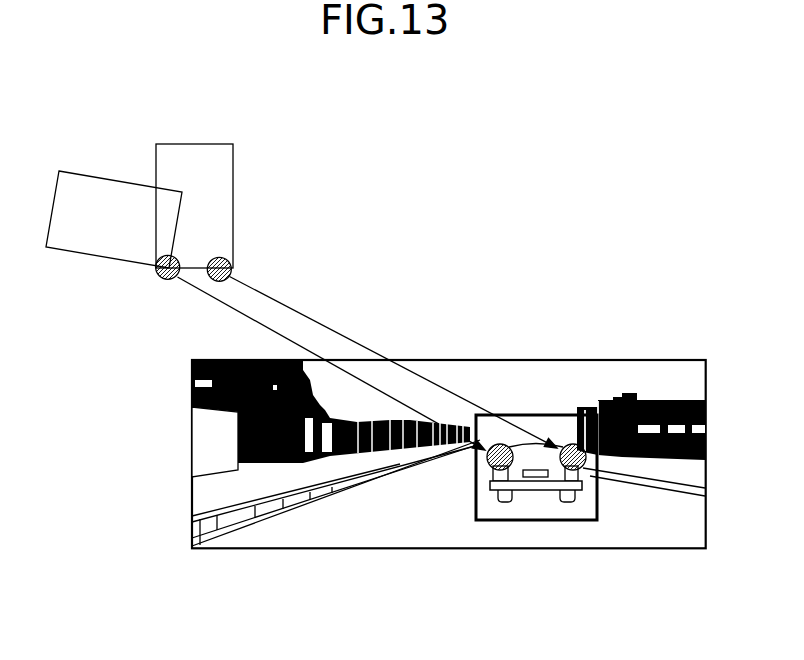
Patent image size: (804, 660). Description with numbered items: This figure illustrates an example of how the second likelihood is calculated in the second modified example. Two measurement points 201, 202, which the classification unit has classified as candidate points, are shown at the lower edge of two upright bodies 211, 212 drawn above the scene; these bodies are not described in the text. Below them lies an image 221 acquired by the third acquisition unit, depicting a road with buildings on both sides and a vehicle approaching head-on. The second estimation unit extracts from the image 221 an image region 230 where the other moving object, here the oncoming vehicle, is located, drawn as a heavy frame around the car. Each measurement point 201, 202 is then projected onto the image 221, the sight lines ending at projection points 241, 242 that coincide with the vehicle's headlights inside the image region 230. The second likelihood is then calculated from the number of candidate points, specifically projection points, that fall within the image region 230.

The measurement point 201 is at (173, 256).
The measurement point 202 is at (232, 272).
The first display unit 211 is at (196, 144).
The second display unit 212 is at (115, 180).
The image 221 is at (682, 358).
The image region 230 is at (536, 456).
The projection point 241 is at (487, 457).
The projection point 242 is at (586, 457).